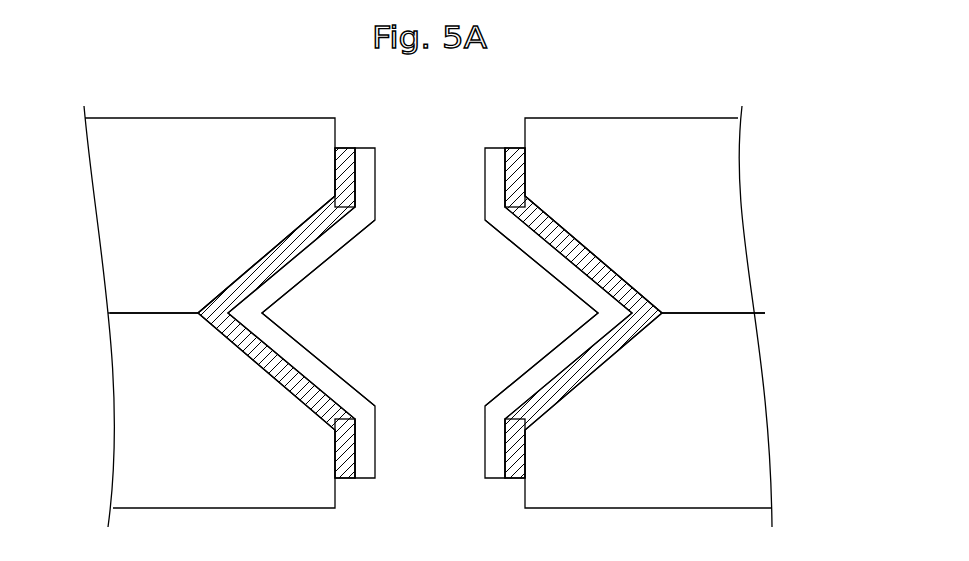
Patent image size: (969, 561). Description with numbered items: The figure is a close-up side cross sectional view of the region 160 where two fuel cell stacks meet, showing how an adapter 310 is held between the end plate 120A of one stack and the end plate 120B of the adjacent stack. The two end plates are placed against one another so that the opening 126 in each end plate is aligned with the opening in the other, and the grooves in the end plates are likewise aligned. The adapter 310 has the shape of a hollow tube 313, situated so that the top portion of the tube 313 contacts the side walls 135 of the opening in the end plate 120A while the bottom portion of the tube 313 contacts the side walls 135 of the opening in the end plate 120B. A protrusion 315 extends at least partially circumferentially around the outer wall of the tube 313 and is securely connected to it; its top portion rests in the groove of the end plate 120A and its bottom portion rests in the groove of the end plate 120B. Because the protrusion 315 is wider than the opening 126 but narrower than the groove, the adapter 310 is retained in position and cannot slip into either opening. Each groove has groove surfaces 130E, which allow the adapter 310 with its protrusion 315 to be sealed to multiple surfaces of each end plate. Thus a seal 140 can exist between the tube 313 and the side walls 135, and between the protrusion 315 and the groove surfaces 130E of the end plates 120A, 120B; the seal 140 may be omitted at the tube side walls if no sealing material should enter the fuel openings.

The region 160 is at (666, 82).
The end plate 120A is at (135, 154).
The end plate 120B is at (180, 474).
The opening 126 is at (442, 141).
The groove surface 130E is at (272, 226).
The side wall 135 is at (322, 160).
The seal 140 is at (240, 292).
The adapter 310 is at (448, 324).
The tube 313 is at (470, 170).
The protrusion 315 is at (334, 270).